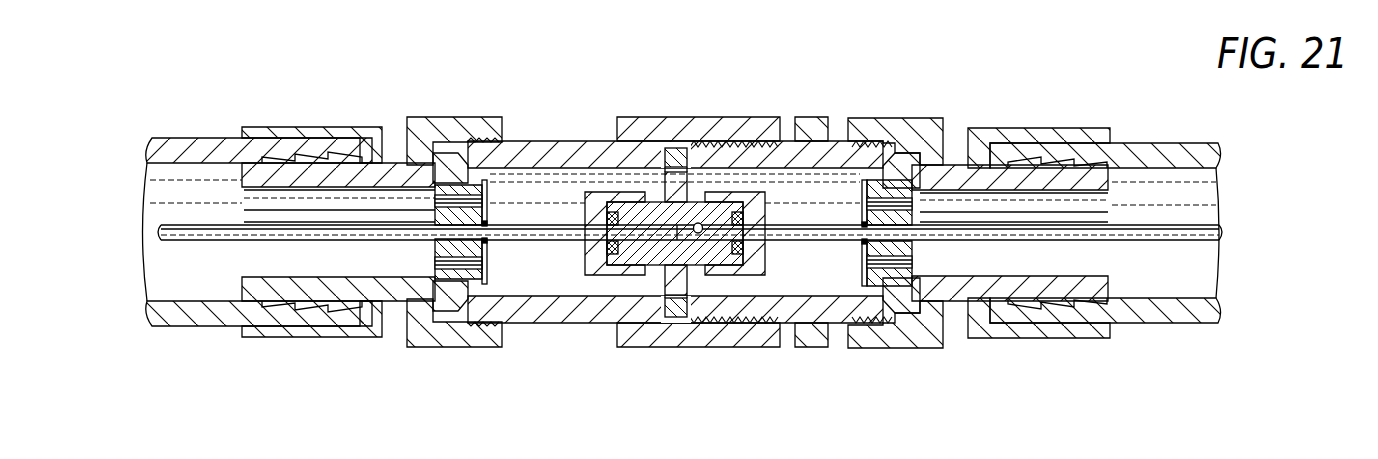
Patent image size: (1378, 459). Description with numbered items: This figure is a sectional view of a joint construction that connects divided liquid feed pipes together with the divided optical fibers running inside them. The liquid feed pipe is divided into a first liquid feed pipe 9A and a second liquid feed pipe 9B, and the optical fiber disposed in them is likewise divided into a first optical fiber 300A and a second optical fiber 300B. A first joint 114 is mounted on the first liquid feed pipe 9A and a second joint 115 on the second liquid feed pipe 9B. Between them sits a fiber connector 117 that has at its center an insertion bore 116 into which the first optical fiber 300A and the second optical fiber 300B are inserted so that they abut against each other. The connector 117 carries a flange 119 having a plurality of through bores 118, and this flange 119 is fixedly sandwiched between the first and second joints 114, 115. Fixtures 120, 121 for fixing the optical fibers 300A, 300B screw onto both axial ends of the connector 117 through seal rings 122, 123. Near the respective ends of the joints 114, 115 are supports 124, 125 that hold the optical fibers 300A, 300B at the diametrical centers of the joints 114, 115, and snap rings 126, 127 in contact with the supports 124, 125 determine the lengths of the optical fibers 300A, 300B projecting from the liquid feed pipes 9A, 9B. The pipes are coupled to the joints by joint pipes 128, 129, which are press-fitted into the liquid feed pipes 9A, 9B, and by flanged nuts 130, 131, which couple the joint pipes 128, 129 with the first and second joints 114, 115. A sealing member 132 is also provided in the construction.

The first liquid feed pipe 9A is at (190, 138).
The second liquid feed pipe 9B is at (1165, 143).
The joint pipe 128 is at (304, 127).
The joint pipe 129 is at (1055, 128).
The flanged nut 130 is at (465, 117).
The flanged nut 131 is at (901, 118).
The first joint 114 is at (530, 141).
The second joint 115 is at (813, 117).
The insertion bore 116 is at (699, 224).
The fiber connector 117 is at (652, 202).
The through bores 118 is at (662, 288).
The flange 119 is at (674, 318).
The fixture 120 is at (597, 192).
The fixture 121 is at (744, 192).
The seal ring 122 is at (613, 266).
The seal ring 123 is at (727, 266).
The support 124 is at (446, 281).
The support 125 is at (893, 282).
The snap ring 126 is at (488, 262).
The snap ring 127 is at (862, 246).
The sealing member 132 is at (670, 165).
The first optical fiber 300A is at (386, 222).
The second optical fiber 300B is at (950, 226).